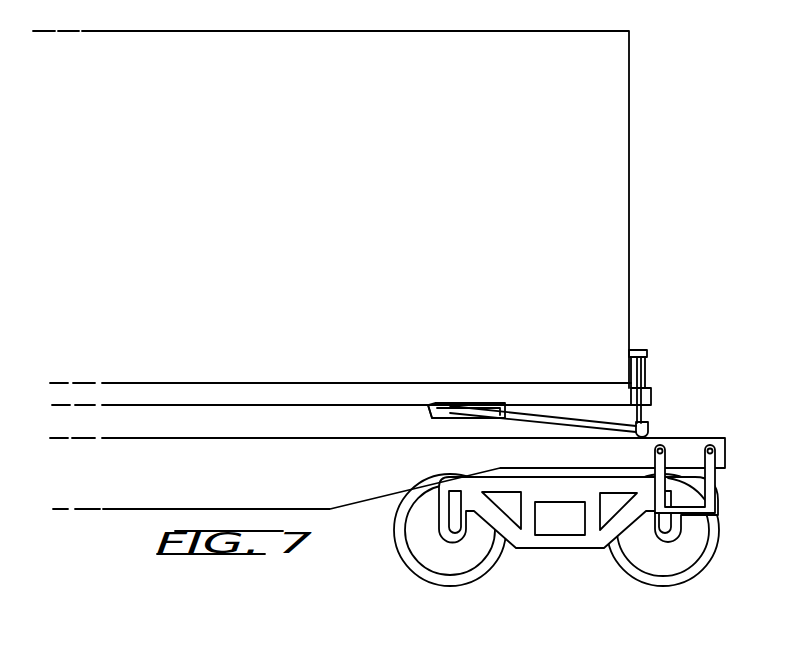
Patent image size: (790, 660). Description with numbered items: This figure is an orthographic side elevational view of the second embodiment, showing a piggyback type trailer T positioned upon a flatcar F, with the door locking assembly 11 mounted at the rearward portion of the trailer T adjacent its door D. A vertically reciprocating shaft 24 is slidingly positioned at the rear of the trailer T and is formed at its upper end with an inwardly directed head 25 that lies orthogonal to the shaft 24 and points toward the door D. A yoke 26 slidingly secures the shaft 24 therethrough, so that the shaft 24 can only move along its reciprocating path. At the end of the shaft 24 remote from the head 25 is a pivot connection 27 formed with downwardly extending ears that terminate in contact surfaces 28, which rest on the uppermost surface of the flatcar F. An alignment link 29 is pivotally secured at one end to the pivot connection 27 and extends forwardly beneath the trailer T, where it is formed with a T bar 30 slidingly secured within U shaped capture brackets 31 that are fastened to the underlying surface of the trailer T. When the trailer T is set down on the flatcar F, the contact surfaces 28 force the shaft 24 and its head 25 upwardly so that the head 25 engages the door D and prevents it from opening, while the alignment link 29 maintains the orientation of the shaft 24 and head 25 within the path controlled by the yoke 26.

The door D is at (629, 304).
The trailer T is at (322, 393).
The flatcar F is at (687, 445).
The latch assembly 11 is at (666, 381).
The vertically reciprocating shaft 24 is at (647, 361).
The inwardly directed head 25 is at (641, 351).
The yoke 26 is at (652, 397).
The pivot connection 27 is at (650, 428).
The contact surfaces 28 is at (649, 437).
The alignment link 29 is at (587, 427).
The T bar 30 is at (453, 411).
The U shaped capture brackets 31 is at (431, 413).